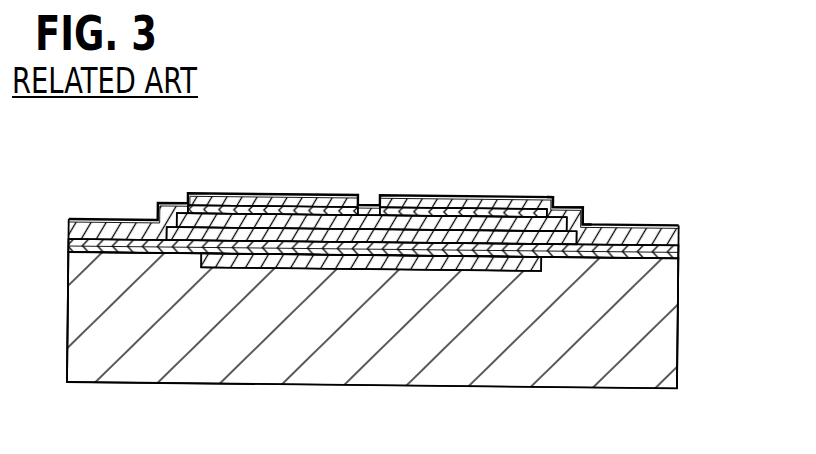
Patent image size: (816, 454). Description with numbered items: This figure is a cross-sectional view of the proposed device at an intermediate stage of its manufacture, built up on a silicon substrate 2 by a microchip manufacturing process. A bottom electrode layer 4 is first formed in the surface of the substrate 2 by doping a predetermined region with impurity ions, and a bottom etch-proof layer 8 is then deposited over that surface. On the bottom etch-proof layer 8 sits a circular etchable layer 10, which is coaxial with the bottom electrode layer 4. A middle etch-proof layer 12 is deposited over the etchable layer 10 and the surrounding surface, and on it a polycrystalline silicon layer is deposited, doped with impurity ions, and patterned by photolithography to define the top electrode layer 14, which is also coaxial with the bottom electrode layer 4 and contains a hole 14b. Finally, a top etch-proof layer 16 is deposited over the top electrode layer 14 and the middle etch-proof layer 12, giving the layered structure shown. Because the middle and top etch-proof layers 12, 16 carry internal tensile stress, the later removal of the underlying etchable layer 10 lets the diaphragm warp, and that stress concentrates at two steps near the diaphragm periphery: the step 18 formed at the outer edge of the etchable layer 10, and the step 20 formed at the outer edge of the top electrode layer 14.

The silicon substrate 2 is at (660, 328).
The bottom electrode layer 4 is at (482, 262).
The bottom etch-proof layer 8 is at (658, 258).
The etchable layer 10 is at (256, 233).
The middle etch-proof layer 12 is at (470, 223).
The top electrode layer 14 is at (455, 206).
The hole 14b is at (413, 205).
The top etch-proof layer 16 is at (525, 203).
The step 18 is at (602, 218).
The step 20 is at (568, 198).